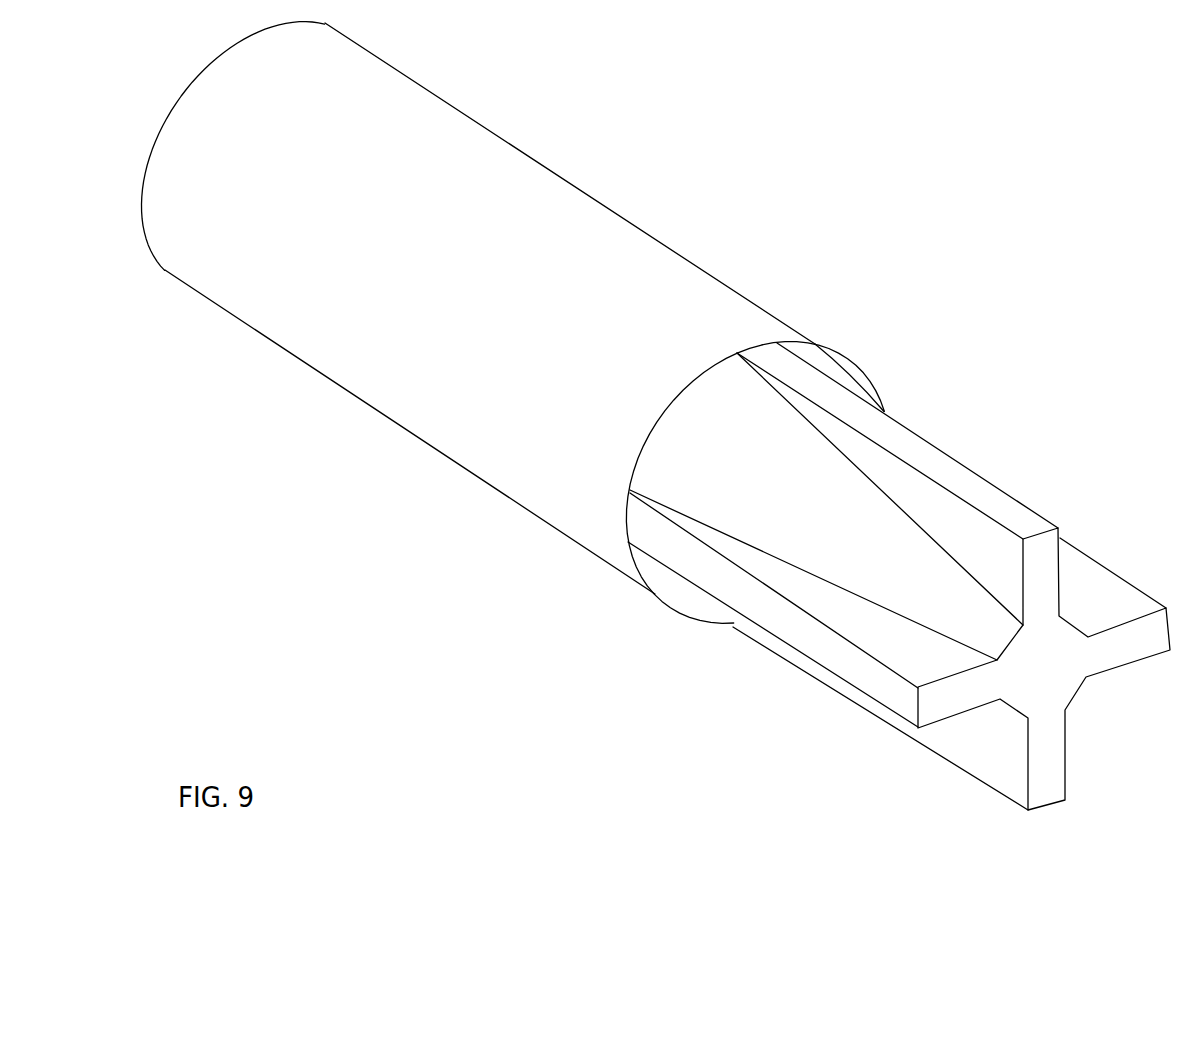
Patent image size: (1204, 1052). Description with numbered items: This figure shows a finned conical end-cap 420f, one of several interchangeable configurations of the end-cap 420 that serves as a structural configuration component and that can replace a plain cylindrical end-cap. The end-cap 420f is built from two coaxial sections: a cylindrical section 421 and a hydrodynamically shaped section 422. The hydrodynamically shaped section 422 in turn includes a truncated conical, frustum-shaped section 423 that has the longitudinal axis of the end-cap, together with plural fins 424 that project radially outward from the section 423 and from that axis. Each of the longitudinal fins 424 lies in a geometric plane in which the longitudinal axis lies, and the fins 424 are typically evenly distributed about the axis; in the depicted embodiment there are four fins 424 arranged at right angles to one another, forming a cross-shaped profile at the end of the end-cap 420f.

The end-cap 420 is at (1032, 302).
The finned conical end-cap 420f is at (671, 452).
The cylindrical section 421 is at (398, 312).
The hydrodynamically shaped section 422 is at (1030, 858).
The truncated conical section 423 is at (733, 453).
The longitudinal fins 424 is at (1020, 517).